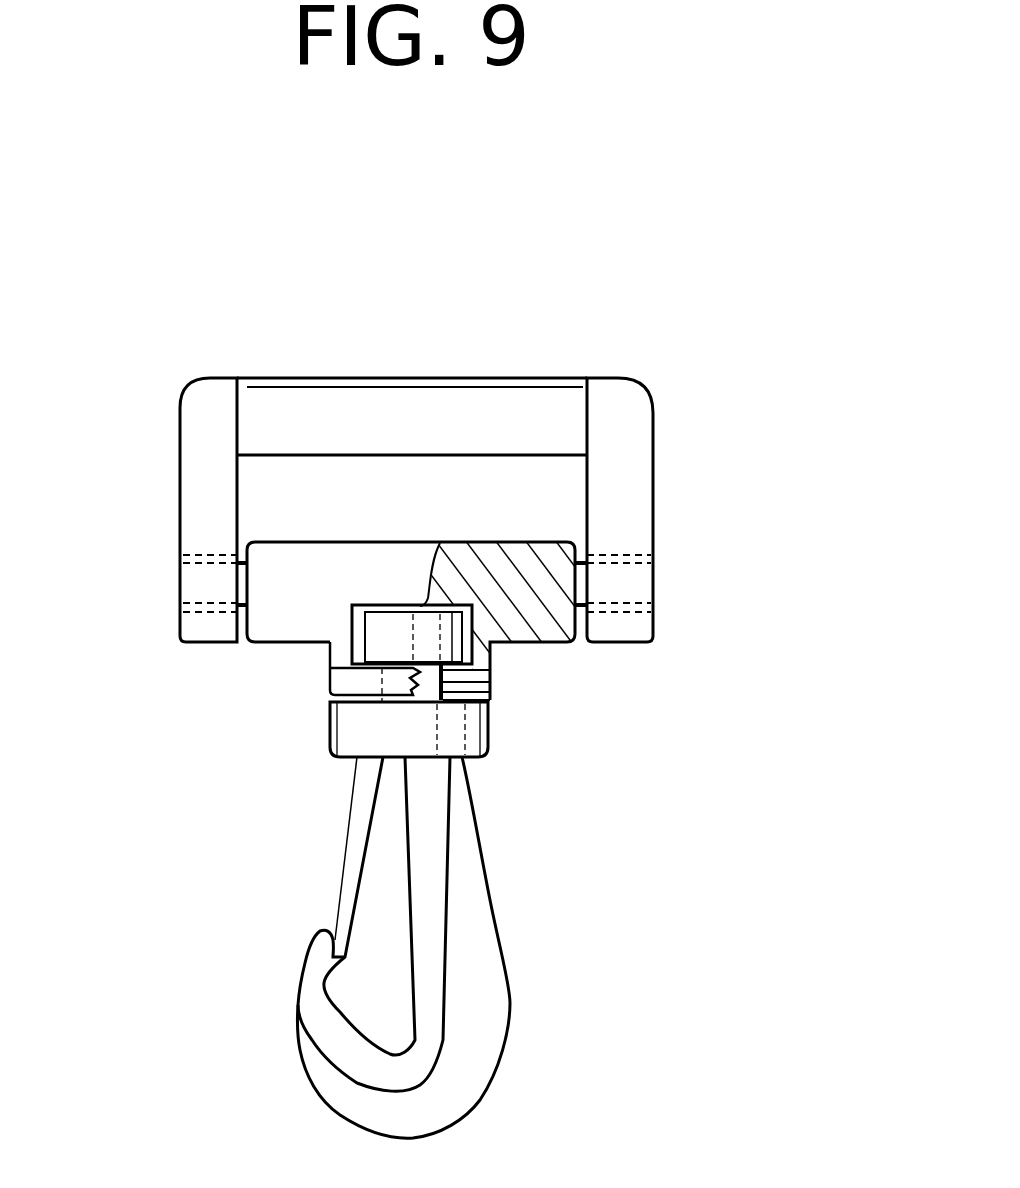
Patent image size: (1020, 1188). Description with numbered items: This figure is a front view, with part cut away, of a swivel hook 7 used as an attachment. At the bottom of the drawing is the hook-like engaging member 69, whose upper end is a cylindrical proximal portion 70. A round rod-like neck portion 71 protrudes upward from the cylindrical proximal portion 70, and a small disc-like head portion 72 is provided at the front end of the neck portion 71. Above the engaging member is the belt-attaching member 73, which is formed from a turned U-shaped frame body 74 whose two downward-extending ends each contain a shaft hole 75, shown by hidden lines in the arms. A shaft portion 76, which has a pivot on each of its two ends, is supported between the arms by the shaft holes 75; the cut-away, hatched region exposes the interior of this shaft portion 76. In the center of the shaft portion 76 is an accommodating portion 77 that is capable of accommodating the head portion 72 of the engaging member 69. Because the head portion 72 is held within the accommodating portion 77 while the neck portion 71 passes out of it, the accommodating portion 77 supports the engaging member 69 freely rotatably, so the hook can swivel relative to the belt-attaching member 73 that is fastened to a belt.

The swivel hook 7 is at (401, 358).
The hook-like engaging member 69 is at (527, 1003).
The cylindrical proximal portion 70 is at (385, 726).
The neck portion 71 is at (490, 693).
The head portion 72 is at (398, 638).
The belt-attaching member 73 is at (668, 470).
The frame body 74 is at (507, 415).
The shaft holes 75 is at (210, 552).
The shaft portion 76 is at (525, 550).
The accommodating portion 77 is at (379, 604).